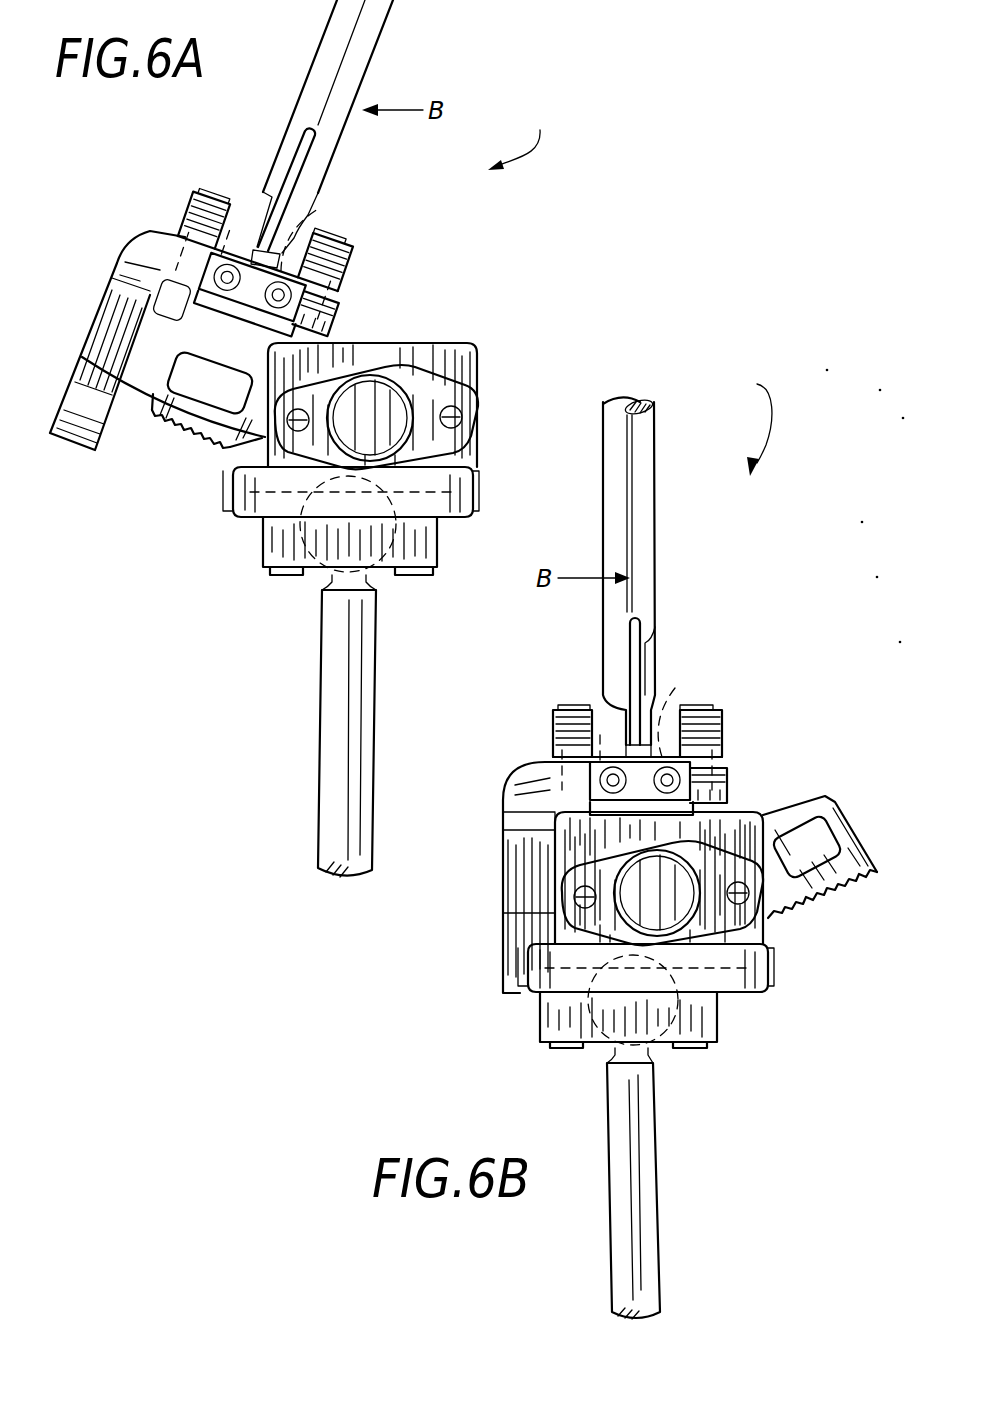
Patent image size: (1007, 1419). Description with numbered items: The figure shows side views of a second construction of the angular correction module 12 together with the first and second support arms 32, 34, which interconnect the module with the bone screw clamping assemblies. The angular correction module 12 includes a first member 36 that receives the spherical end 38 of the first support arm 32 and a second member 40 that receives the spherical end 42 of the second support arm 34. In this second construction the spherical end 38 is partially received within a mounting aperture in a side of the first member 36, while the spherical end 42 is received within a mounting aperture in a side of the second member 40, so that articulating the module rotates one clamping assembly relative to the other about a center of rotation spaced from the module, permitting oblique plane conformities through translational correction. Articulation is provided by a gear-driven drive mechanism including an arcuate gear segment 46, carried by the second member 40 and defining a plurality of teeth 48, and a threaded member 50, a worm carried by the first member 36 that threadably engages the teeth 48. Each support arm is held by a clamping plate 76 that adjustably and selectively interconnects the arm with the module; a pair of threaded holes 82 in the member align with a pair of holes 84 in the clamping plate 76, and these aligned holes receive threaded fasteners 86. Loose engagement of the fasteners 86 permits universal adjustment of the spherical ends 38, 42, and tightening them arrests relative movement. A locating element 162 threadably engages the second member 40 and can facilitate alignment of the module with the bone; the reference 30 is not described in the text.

In FIG. 6A, the angular correction module 12 is at (529, 131).
In FIG. 6B, the angular correction module 12 is at (748, 423).
In FIG. 6A, the head assembly 30 is at (129, 231).
In FIG. 6B, the head assembly 30 is at (768, 736).
In FIG. 6A, the first support arm 32 is at (323, 772).
In FIG. 6B, the first support arm 32 is at (660, 1210).
In FIG. 6A, the second support arm 34 is at (372, 73).
In FIG. 6B, the second support arm 34 is at (658, 533).
In FIG. 6A, the first member 36 is at (469, 343).
In FIG. 6B, the first member 36 is at (764, 813).
In FIG. 6A, the end of the first support arm 38 is at (386, 565).
In FIG. 6B, the end of the first support arm 38 is at (668, 1050).
In FIG. 6A, the second member 40 is at (69, 375).
In FIG. 6B, the second member 40 is at (514, 778).
In FIG. 6A, the end of the second support arm 42 is at (300, 265).
In FIG. 6B, the end of the second support arm 42 is at (672, 712).
In FIG. 6A, the arcuate gear segment 46 is at (158, 427).
In FIG. 6B, the arcuate gear segment 46 is at (855, 833).
In FIG. 6A, the teeth 48 is at (182, 433).
In FIG. 6B, the teeth 48 is at (830, 896).
In FIG. 6A, the threaded member 50 is at (478, 487).
In FIG. 6B, the threaded member 50 is at (771, 965).
In FIG. 6A, the clamping plate 76 is at (195, 202).
In FIG. 6B, the clamping plate 76 is at (550, 735).
In FIG. 6A, the threaded holes 82 is at (340, 277).
In FIG. 6B, the threaded holes 82 is at (570, 778).
In FIG. 6A, the holes 84 is at (172, 212).
In FIG. 6B, the holes 84 is at (734, 733).
In FIG. 6A, the threaded fasteners 86 is at (221, 200).
In FIG. 6B, the threaded fasteners 86 is at (585, 708).
In FIG. 6A, the locating element 162 is at (318, 175).
In FIG. 6B, the locating element 162 is at (657, 622).